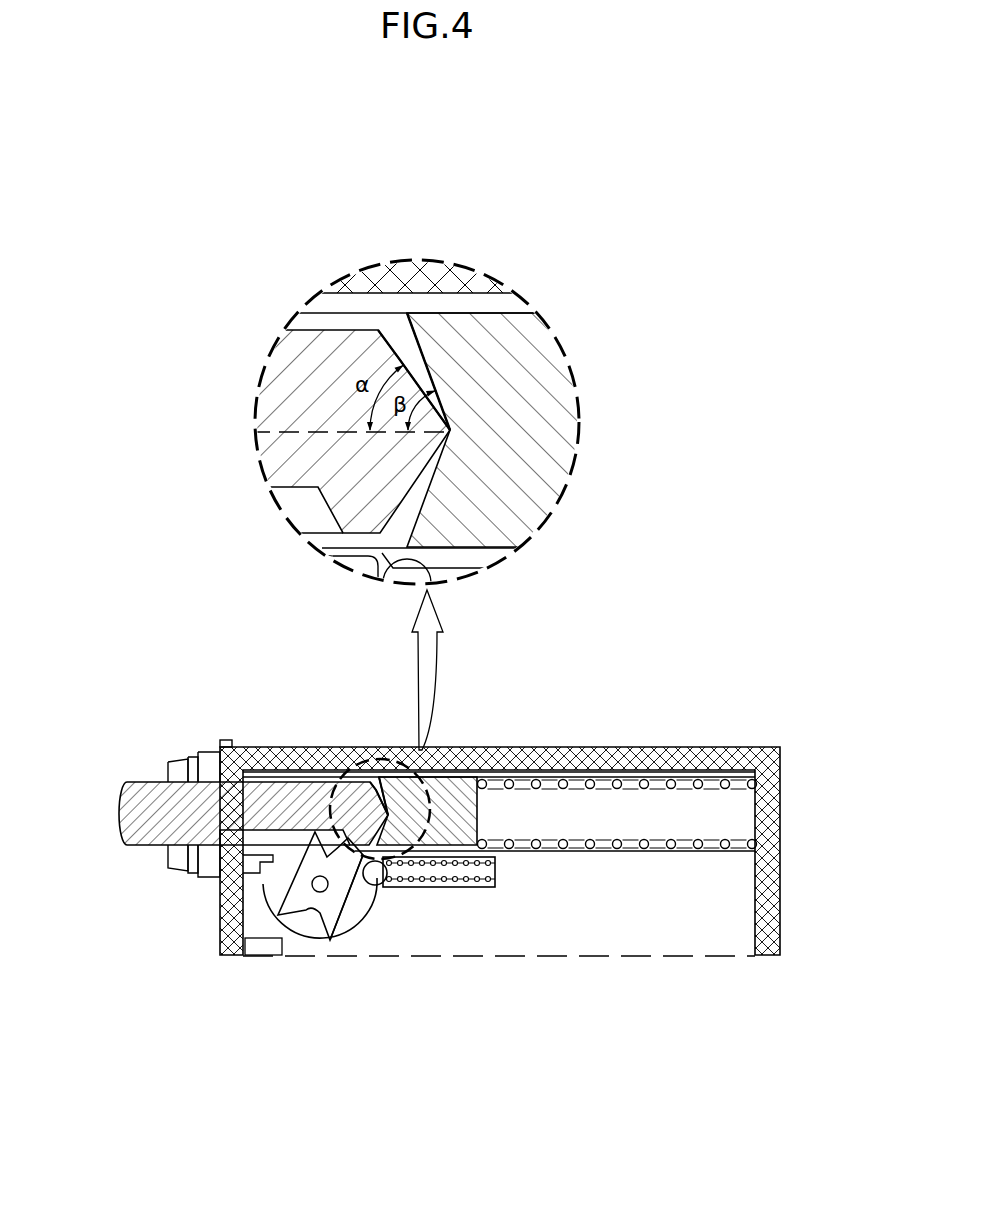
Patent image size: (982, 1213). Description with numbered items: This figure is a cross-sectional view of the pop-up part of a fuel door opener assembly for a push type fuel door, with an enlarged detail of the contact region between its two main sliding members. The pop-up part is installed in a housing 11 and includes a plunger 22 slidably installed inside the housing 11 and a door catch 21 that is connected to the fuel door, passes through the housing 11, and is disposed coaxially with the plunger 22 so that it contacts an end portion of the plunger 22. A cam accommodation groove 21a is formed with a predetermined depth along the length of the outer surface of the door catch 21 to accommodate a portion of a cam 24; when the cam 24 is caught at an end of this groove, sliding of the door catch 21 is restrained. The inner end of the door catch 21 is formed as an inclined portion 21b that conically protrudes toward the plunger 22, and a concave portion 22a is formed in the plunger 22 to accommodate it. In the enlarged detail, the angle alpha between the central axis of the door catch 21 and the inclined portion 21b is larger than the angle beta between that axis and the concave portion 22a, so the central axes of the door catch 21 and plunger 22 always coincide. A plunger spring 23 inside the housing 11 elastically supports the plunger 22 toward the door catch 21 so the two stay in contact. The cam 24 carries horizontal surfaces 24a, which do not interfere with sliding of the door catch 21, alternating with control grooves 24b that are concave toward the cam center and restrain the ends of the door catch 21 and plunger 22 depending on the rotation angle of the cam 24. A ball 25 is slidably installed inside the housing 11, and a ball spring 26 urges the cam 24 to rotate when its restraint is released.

The housing 11 is at (520, 748).
The door catch 21 is at (147, 782).
The cam accommodation groove 21a is at (218, 873).
The inclined portion 21b is at (372, 784).
The plunger 22 is at (444, 792).
The concave portion 22a is at (383, 778).
The plunger spring 23 is at (587, 783).
The cam 24 is at (317, 915).
The horizontal surface 24a is at (347, 908).
The control groove 24b is at (292, 917).
The ball 25 is at (383, 887).
The ball spring 26 is at (470, 888).